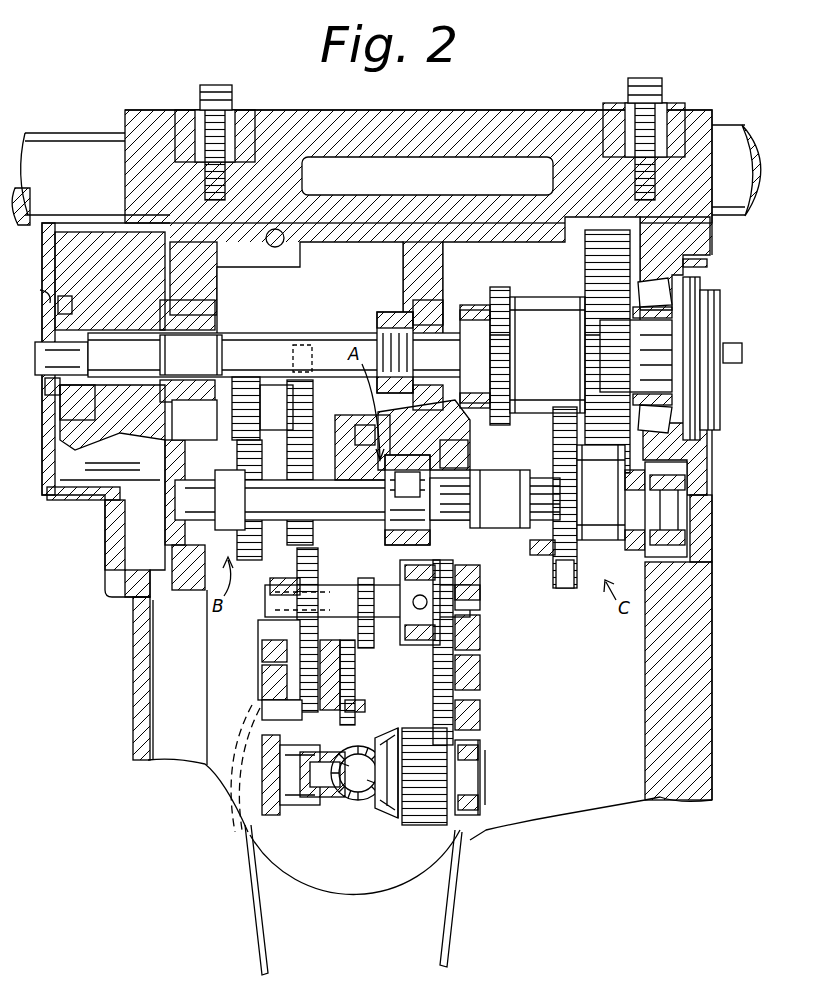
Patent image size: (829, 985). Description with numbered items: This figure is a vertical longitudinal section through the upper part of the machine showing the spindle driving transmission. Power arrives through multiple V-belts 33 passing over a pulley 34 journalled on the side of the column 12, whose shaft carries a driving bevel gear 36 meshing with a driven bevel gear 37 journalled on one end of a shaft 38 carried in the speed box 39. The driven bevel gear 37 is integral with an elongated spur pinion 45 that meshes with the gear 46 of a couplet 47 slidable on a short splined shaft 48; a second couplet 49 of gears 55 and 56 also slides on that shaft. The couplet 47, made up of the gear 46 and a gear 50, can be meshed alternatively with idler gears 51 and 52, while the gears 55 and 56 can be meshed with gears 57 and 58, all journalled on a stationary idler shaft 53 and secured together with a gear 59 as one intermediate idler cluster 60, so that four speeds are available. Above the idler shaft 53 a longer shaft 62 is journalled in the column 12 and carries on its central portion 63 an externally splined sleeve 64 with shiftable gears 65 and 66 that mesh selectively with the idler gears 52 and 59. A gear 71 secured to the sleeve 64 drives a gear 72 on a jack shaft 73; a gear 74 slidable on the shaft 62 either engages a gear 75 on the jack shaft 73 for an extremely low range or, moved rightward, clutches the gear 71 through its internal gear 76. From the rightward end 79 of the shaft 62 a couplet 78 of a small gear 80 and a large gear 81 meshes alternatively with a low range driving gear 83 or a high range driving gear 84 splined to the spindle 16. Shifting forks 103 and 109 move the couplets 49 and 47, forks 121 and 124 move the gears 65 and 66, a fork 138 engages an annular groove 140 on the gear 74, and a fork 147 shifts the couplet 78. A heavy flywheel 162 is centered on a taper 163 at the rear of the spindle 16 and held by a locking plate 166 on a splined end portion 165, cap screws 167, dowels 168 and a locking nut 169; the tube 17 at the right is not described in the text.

The column 12 is at (713, 598).
The spindle 16 is at (708, 300).
The tube 17 is at (722, 128).
The V-belts 33 is at (252, 960).
The pulley 34 is at (347, 893).
The driving bevel gear 36 is at (348, 806).
The driven bevel gear 37 is at (385, 812).
The shaft 38 is at (465, 775).
The speed box 39 is at (250, 641).
The elongated spur pinion 45 is at (428, 822).
The gear 46 is at (468, 680).
The gear couplet 47 is at (375, 771).
The splined shaft 48 is at (266, 683).
The second gear couplet 49 is at (330, 690).
The gear 50 is at (470, 648).
The idler gear 51 is at (468, 566).
The idler gear 52 is at (420, 602).
The idler shaft 53 is at (470, 596).
The gear 55 is at (360, 713).
The gear 56 is at (350, 714).
The gear 57 is at (356, 640).
The gear 58 is at (305, 570).
The gear 59 is at (333, 595).
The intermediate idler cluster 60 is at (275, 587).
The shaft 62 is at (706, 498).
The central portion 63 is at (437, 497).
The externally splined sleeve 64 is at (322, 483).
The shiftable gear 65 is at (452, 450).
The shiftable gear 66 is at (340, 480).
The gear 71 is at (298, 522).
The gear 72 is at (314, 340).
The jack shaft 73 is at (272, 378).
The gear 74 is at (265, 452).
The gear 75 is at (248, 392).
The internal gear 76 is at (313, 460).
The couplet 78 is at (588, 551).
The rightward end 79 is at (487, 495).
The small gear 80 is at (613, 538).
The large gear 81 is at (565, 590).
The low range driving gear 83 is at (588, 272).
The high range driving gear 84 is at (493, 290).
The shifting fork 103 is at (268, 702).
The shifting fork 109 is at (358, 773).
The shifting fork 121 is at (401, 500).
The shifting fork 124 is at (385, 472).
The shifting fork 138 is at (206, 592).
The annular groove 140 is at (226, 452).
The shifting fork 147 is at (548, 548).
The flywheel 162 is at (75, 466).
The taper 163 is at (168, 338).
The splined end portion 165 is at (55, 350).
The locking plate 166 is at (58, 316).
The cap screws 167 is at (42, 300).
The dowels 168 is at (92, 411).
The locking nut 169 is at (50, 380).